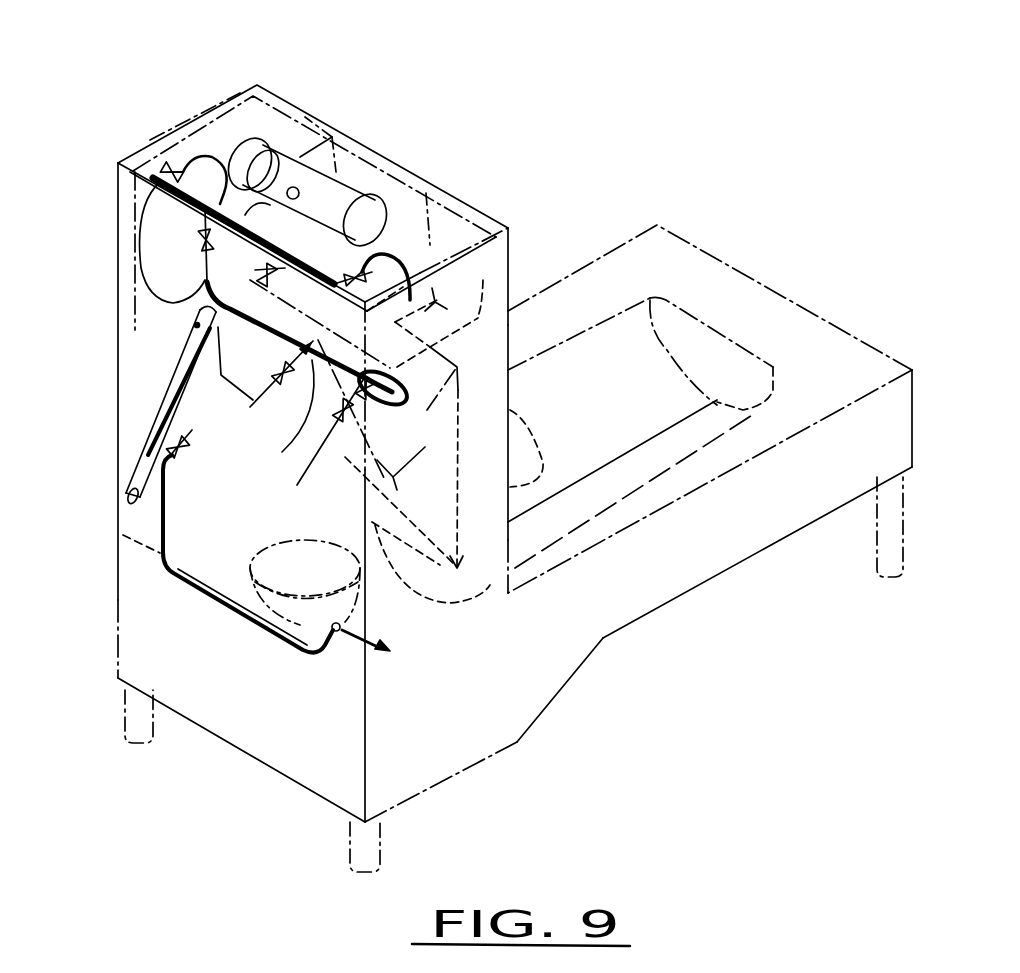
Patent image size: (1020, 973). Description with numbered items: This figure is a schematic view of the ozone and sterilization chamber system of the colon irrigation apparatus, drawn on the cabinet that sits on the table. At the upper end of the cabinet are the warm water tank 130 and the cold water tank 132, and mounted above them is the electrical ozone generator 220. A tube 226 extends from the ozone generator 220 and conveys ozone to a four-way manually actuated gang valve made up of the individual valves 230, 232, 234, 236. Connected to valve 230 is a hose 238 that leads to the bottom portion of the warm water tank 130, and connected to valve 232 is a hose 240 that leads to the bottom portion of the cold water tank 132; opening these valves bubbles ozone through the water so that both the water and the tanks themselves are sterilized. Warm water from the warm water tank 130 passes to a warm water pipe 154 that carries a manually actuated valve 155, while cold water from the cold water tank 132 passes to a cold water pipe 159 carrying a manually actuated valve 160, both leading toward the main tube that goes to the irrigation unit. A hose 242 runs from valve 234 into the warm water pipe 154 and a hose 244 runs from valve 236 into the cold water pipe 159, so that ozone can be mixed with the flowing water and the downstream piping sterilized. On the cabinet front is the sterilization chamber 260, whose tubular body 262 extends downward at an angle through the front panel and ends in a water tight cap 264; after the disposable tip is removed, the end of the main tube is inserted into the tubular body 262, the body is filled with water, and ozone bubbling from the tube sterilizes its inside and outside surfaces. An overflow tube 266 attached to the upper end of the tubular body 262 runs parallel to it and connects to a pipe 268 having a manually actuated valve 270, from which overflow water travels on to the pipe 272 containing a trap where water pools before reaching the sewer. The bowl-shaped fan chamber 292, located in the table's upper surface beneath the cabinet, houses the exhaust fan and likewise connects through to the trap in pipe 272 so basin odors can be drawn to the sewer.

The warm water tank 130 is at (433, 223).
The cold water tank 132 is at (297, 137).
The warm water pipe 154 is at (350, 413).
The manually actuated valve 155 is at (314, 446).
The cold water pipe 159 is at (284, 452).
The manually actuated valve 160 is at (228, 382).
The ozone generator 220 is at (330, 197).
The tube 226 is at (253, 200).
The valve 230 is at (345, 283).
The valve 232 is at (160, 168).
The valve 234 is at (255, 270).
The valve 236 is at (190, 233).
The hose 238 is at (478, 225).
The hose 240 is at (203, 157).
The hose 242 is at (408, 382).
The hose 244 is at (160, 294).
The sterilization chamber 260 is at (150, 383).
The tubular body 262 is at (153, 436).
The water tight cap 264 is at (128, 498).
The overflow tube 266 is at (197, 357).
The pipe 268 is at (160, 530).
The manually actuated valve 270 is at (165, 455).
The pipe 272 is at (401, 642).
The fan chamber 292 is at (288, 585).